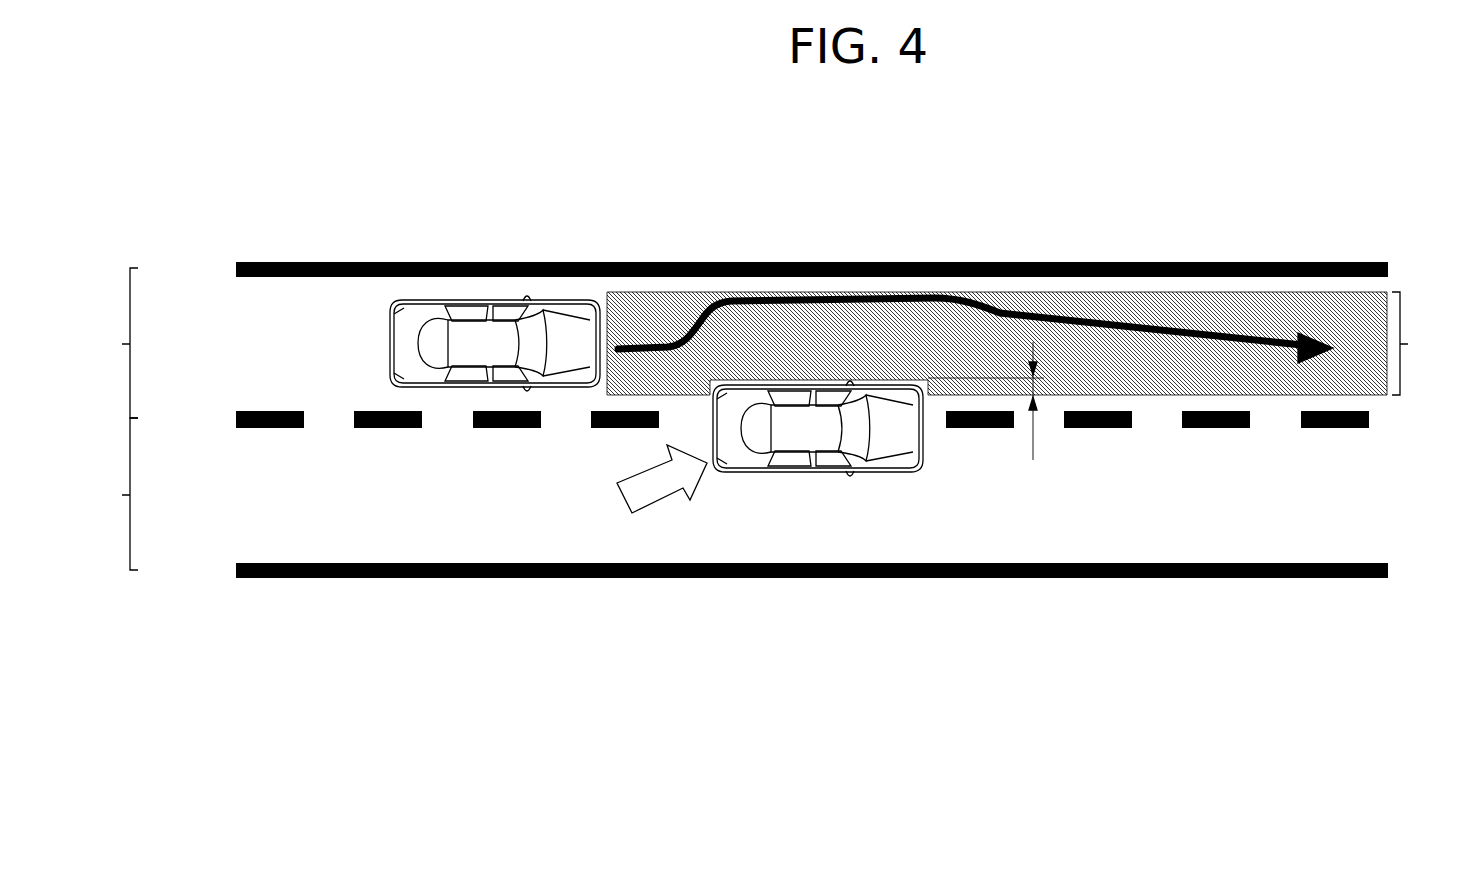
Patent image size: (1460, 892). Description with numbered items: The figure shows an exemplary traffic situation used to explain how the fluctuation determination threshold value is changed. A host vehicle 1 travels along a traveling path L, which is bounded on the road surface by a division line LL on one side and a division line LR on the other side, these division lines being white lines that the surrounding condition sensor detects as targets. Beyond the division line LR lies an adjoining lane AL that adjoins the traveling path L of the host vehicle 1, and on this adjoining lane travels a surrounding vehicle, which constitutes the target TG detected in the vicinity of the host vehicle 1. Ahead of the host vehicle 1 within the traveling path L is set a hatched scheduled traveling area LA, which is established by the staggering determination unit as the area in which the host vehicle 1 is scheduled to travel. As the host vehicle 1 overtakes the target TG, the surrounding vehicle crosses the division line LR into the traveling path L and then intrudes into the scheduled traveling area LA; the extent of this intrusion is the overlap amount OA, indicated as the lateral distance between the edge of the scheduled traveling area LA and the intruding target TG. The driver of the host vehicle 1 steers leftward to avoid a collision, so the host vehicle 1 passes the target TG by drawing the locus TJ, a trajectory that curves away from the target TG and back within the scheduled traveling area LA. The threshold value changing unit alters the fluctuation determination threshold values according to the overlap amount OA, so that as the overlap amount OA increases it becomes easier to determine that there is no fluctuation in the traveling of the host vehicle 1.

The host vehicle 1 is at (475, 338).
The division line LL is at (232, 268).
The division line LR is at (232, 416).
The traveling path L is at (115, 343).
The adjoining lane AL is at (110, 494).
The scheduled traveling area LA is at (1027, 343).
The locus TJ is at (1198, 334).
The overlap amount OA is at (1000, 401).
The target TG is at (797, 437).